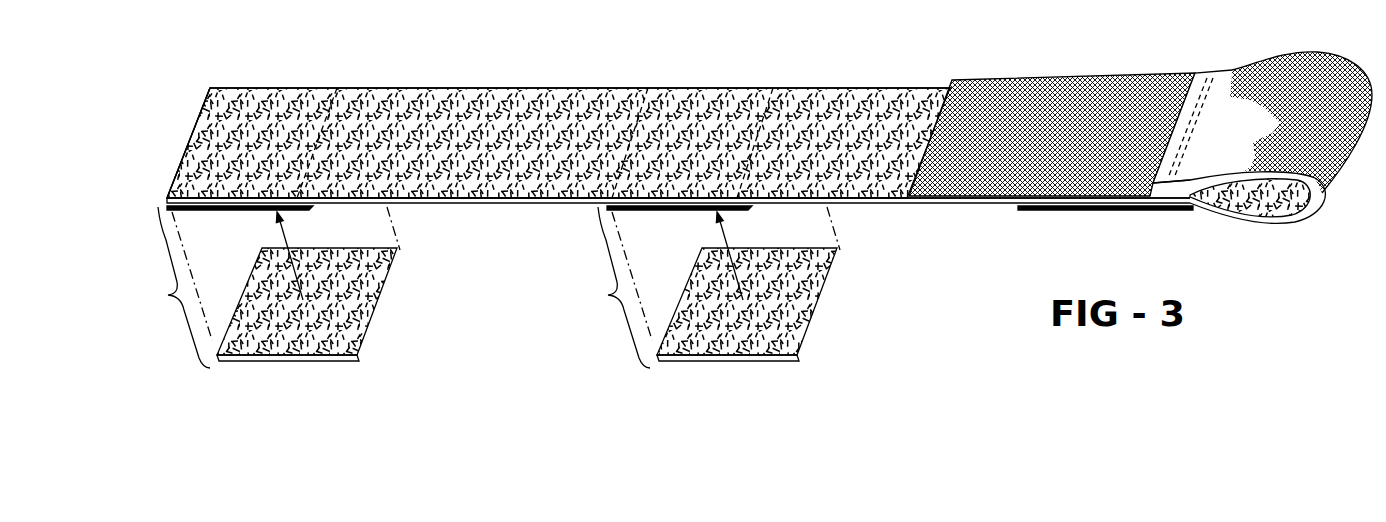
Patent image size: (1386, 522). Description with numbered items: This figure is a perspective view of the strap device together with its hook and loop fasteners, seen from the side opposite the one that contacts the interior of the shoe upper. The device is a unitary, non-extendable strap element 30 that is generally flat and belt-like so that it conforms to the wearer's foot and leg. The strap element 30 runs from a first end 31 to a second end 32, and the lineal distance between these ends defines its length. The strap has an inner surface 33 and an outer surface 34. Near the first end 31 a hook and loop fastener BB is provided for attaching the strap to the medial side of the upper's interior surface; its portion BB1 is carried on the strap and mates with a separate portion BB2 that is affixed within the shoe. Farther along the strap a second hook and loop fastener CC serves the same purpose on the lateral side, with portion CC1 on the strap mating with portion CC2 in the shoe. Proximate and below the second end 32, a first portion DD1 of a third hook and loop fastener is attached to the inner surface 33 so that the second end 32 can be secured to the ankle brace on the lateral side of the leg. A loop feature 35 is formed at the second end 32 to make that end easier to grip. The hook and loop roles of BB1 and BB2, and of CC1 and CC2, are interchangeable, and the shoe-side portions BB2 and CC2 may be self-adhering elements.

The strap element 30 is at (717, 78).
The first end 31 is at (198, 124).
The second end 32 is at (1348, 152).
The inner surface 33 is at (428, 103).
The outer surface 34 is at (858, 206).
The loop feature 35 is at (1272, 196).
The hook and loop fastener BB is at (266, 287).
The first portion of hook and loop fastener BB BB1 is at (196, 204).
The second portion of hook and loop fastener BB BB2 is at (287, 363).
The hook and loop fastener CC is at (705, 287).
The first portion of hook and loop fastener CC CC1 is at (629, 210).
The second portion of hook and loop fastener CC CC2 is at (773, 362).
The first portion of hook and loop fastener DD DD1 is at (1045, 79).